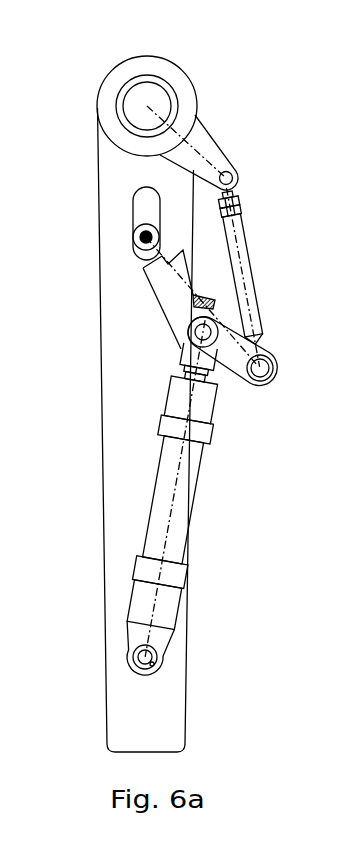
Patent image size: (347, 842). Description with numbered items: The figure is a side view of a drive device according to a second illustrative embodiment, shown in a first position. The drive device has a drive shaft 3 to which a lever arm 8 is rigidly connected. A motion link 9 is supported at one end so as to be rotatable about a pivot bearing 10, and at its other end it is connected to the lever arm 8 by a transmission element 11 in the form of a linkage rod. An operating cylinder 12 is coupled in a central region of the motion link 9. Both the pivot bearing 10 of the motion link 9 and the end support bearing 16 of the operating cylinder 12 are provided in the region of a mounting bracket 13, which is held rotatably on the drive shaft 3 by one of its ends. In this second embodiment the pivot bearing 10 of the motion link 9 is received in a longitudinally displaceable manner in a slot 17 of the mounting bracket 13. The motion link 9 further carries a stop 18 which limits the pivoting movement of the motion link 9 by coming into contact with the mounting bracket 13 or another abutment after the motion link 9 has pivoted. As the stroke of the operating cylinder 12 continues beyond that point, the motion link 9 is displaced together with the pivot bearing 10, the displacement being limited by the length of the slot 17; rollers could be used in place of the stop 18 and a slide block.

The drive shaft 3 is at (128, 102).
The lever arm 8 is at (210, 152).
The motion link 9 is at (172, 293).
The pivot bearing 10 is at (140, 237).
The transmission element 11 is at (250, 280).
The operating cylinder 12 is at (187, 477).
The mounting bracket 13 is at (115, 515).
The end support bearing 16 is at (148, 660).
The slot 17 is at (138, 203).
The stop 18 is at (213, 300).